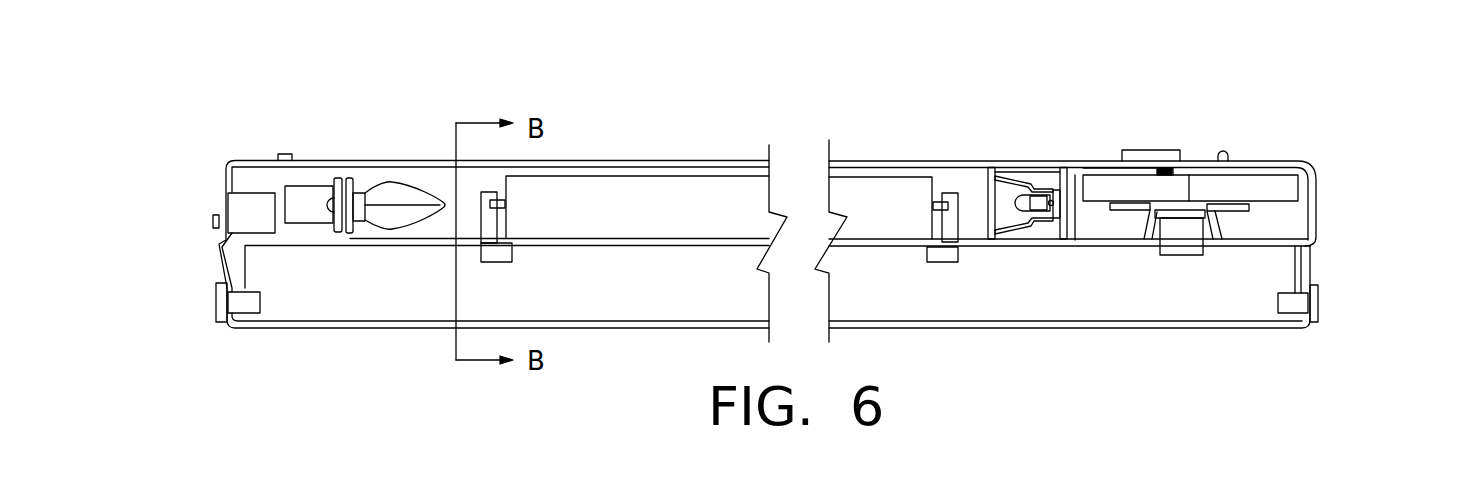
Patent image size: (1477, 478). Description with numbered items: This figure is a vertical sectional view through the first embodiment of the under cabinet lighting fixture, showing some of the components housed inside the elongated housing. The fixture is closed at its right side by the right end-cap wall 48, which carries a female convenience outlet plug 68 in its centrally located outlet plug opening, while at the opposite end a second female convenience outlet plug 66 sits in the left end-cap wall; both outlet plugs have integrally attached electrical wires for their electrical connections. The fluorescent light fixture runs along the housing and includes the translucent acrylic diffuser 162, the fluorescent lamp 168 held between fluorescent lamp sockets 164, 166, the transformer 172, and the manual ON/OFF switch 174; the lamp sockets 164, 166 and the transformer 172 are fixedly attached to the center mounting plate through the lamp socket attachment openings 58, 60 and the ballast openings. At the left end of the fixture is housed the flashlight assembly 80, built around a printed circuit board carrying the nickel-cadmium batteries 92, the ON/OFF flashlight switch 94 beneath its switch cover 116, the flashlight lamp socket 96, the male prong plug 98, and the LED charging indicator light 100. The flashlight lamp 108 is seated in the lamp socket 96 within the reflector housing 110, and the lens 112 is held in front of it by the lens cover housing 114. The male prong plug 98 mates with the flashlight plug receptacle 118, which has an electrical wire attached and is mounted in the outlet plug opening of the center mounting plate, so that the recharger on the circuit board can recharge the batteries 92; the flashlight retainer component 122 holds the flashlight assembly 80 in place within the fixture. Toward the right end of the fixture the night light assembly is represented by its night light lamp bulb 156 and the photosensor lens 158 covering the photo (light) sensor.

The right end-cap wall 48 is at (1313, 277).
The lamp socket attachment opening 58 is at (475, 247).
The lamp socket attachment opening 60 is at (960, 250).
The female convenience outlet plug 66 is at (245, 302).
The female convenience outlet plug 68 is at (1320, 303).
The flashlight assembly 80 is at (1332, 158).
The nickel-cadmium batteries 92 is at (1237, 190).
The ON/OFF flashlight switch 94 is at (1172, 173).
The flashlight lamp socket 96 is at (1047, 193).
The male prong plug 98 is at (1160, 257).
The LED charging indicator light 100 is at (1217, 153).
The flashlight lamp 108 is at (1013, 220).
The reflector housing 110 is at (1037, 213).
The lens 112 is at (987, 190).
The lens cover housing 114 is at (1040, 157).
The switch cover 116 is at (1130, 150).
The flashlight plug receptacle 118 is at (1207, 212).
The flashlight retainer component 122 is at (1185, 263).
The night light lamp bulb 156 is at (387, 193).
The photosensor lens 158 is at (280, 154).
The translucent acrylic diffuser 162 is at (582, 160).
The fluorescent lamp socket 164 is at (488, 225).
The fluorescent lamp socket 166 is at (952, 227).
The fluorescent lamp 168 is at (645, 200).
The transformer 172 is at (592, 290).
The manual ON/OFF switch 174 is at (217, 220).